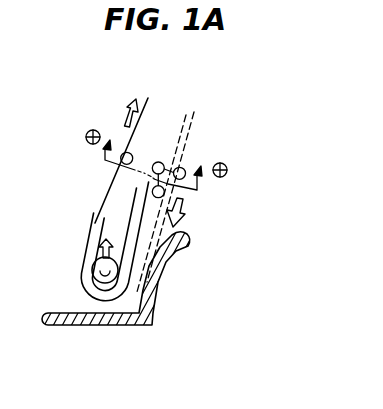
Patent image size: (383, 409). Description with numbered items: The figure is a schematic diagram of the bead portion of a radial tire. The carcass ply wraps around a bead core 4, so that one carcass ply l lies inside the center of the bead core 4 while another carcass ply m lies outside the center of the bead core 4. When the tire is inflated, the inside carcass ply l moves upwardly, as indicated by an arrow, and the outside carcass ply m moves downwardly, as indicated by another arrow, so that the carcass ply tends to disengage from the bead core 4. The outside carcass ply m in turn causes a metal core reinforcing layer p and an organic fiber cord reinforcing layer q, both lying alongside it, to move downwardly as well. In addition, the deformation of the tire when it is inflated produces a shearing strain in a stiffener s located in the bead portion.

The bead core 4 is at (93, 268).
The stiffener s is at (107, 205).
The carcass ply l is at (113, 183).
The carcass ply m is at (145, 122).
The metal core reinforcing layer p is at (158, 205).
The organic fiber cord reinforcing layer q is at (185, 117).